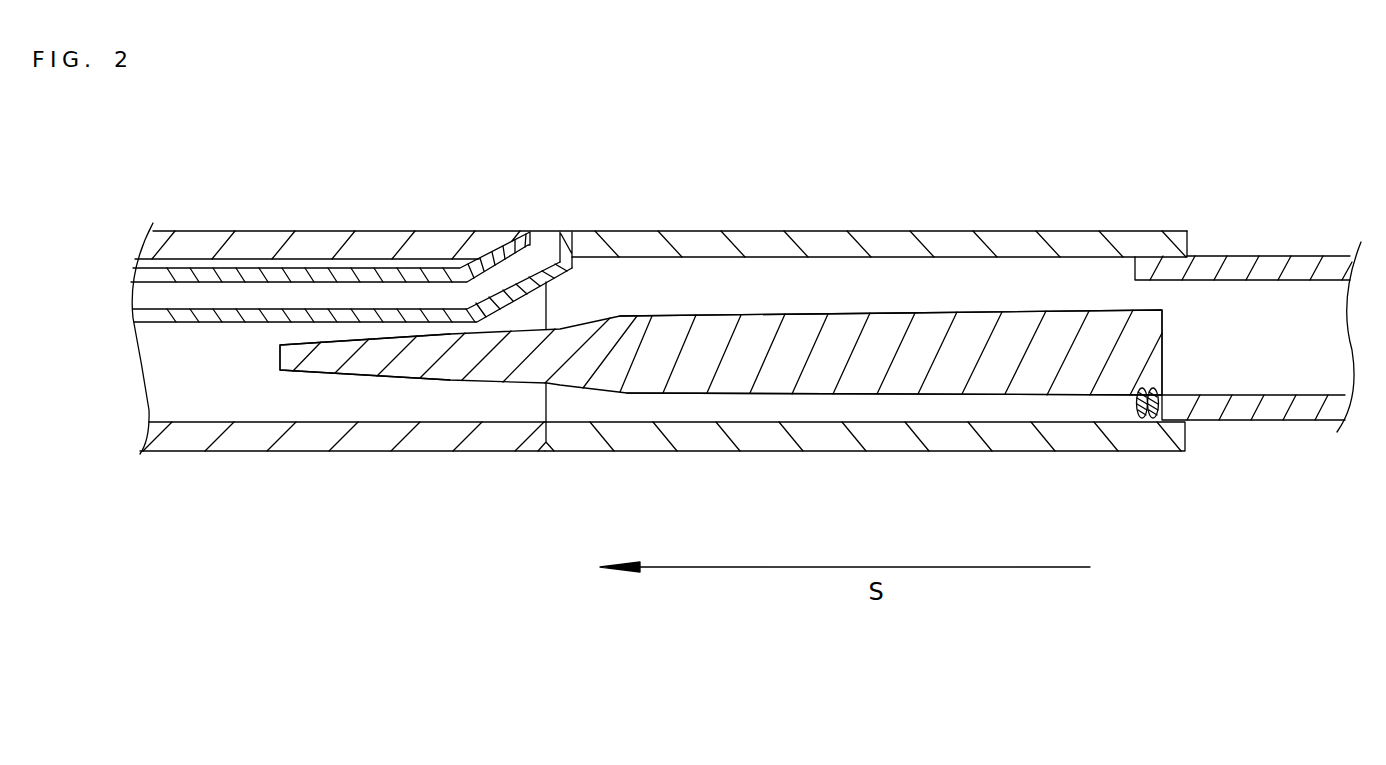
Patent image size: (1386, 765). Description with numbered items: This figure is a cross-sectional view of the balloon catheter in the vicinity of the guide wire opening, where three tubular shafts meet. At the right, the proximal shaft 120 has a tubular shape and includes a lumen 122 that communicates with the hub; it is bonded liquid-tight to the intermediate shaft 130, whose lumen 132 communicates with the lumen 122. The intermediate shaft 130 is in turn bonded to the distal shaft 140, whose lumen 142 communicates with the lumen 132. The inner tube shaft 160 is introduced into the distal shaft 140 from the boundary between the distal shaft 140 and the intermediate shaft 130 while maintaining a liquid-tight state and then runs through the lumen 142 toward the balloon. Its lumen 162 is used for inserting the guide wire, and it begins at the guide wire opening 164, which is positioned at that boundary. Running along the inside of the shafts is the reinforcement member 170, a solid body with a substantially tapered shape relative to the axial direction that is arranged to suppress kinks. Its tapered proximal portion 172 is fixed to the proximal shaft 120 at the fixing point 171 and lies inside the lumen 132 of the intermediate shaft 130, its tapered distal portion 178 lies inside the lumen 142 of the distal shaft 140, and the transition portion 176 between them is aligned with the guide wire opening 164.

The proximal shaft 120 is at (1266, 256).
The lumen 122 is at (1283, 352).
The intermediate shaft 130 is at (1010, 230).
The lumen 132 is at (883, 298).
The distal shaft 140 is at (313, 231).
The lumen 142 is at (245, 387).
The inner tube shaft 160 is at (187, 322).
The lumen 162 is at (369, 306).
The guide wire opening 164 is at (545, 231).
The reinforcement member 170 is at (423, 497).
The fixing point 171 is at (1162, 402).
The proximal portion 172 is at (715, 393).
The transition portion 176 is at (567, 386).
The distal portion 178 is at (446, 383).